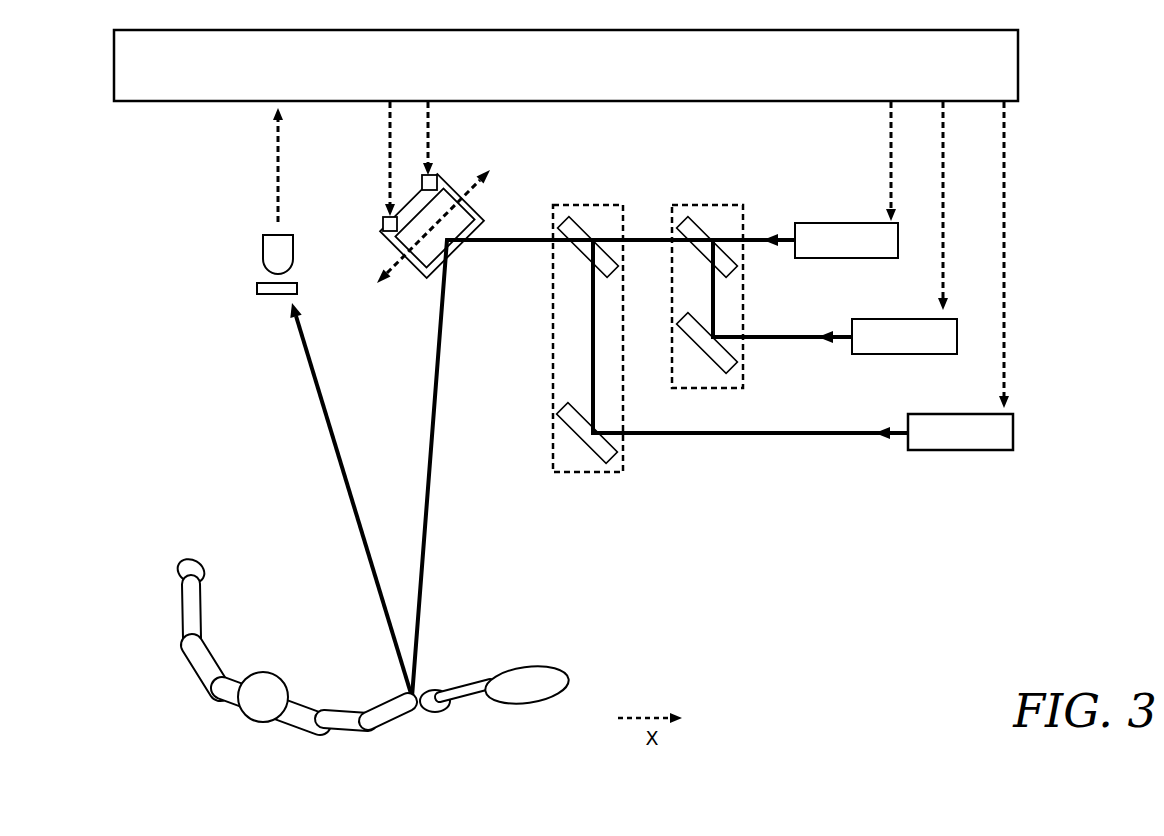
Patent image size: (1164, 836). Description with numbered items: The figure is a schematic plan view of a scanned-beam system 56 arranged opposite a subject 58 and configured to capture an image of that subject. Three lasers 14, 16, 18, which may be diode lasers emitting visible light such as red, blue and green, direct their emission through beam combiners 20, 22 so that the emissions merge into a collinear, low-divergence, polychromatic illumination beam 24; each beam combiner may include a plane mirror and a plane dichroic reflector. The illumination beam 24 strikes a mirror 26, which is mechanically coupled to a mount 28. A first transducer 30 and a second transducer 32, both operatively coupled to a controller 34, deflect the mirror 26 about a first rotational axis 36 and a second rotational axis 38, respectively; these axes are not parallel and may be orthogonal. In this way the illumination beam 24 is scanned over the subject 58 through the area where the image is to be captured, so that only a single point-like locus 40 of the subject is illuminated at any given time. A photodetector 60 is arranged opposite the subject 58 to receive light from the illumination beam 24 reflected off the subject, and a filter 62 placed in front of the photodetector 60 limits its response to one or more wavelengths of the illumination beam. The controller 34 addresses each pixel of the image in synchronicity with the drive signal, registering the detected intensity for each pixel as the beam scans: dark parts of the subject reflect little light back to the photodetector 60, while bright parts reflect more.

The laser 14 is at (834, 254).
The laser 16 is at (892, 350).
The laser 18 is at (947, 446).
The beam combiner 20 is at (708, 205).
The beam combiner 22 is at (588, 205).
The illumination beam 24 is at (437, 395).
The mirror 26 is at (446, 225).
The mount 28 is at (397, 250).
The first transducer 30 is at (383, 229).
The second transducer 32 is at (422, 181).
The controller 34 is at (555, 77).
The first rotational axis 36 is at (435, 228).
The second rotational axis 38 is at (473, 190).
The point-like locus 40 is at (412, 702).
The scanned-beam system 56 is at (849, 550).
The subject 58 is at (172, 534).
The photodetector 60 is at (262, 252).
The filter 62 is at (257, 288).